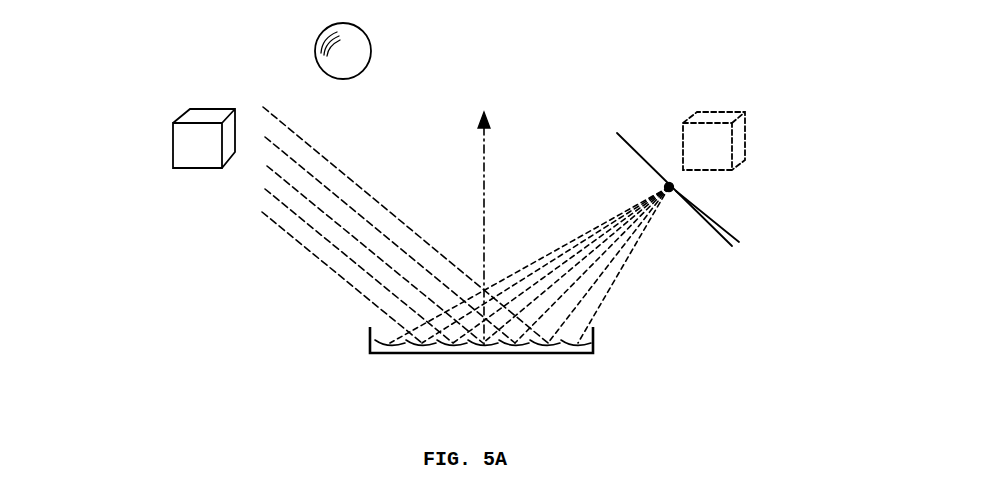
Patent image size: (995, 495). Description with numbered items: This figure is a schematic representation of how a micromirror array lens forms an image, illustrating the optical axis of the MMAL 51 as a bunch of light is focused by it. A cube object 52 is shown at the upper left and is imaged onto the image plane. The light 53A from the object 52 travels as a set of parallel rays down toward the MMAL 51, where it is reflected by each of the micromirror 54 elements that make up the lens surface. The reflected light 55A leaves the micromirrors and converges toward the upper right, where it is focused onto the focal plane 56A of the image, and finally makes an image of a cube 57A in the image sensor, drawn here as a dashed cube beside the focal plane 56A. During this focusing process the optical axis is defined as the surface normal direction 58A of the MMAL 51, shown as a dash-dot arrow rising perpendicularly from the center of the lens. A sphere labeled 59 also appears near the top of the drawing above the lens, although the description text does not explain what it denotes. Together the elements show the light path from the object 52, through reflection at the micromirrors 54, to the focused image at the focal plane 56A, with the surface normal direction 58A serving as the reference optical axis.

The MMAL 51 is at (363, 337).
The cube object 52 is at (170, 143).
The light from the object 53A is at (295, 249).
The micromirror 54 is at (594, 354).
The reflected light 55A is at (619, 280).
The focal plane 56A is at (703, 202).
The image of a cube 57A is at (748, 133).
The surface normal direction 58A is at (488, 158).
The reference sphere 59 is at (372, 46).